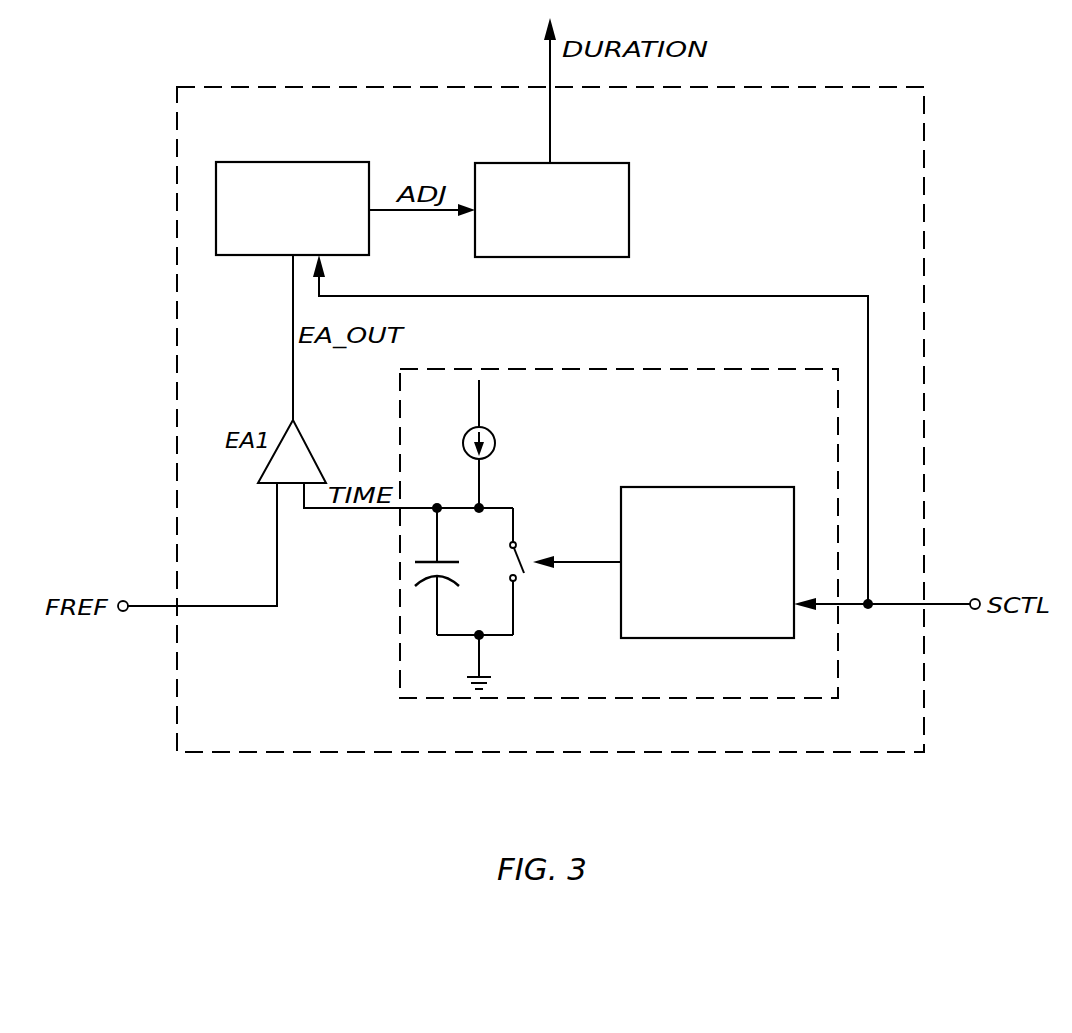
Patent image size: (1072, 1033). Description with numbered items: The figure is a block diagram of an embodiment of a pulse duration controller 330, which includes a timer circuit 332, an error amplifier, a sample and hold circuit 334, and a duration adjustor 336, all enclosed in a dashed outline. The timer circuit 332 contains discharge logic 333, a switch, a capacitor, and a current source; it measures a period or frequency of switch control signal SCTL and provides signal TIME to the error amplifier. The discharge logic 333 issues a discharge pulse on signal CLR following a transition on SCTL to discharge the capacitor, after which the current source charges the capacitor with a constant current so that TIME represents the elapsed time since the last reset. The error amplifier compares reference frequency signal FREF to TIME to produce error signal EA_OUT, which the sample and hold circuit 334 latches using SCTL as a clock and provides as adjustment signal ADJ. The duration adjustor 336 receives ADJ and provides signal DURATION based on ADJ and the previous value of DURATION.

The pulse duration controller 330 is at (762, 87).
The timer circuit 332 is at (783, 348).
The discharge logic 333 is at (740, 487).
The sample and hold circuit 334 is at (222, 162).
The duration adjustor 336 is at (605, 163).